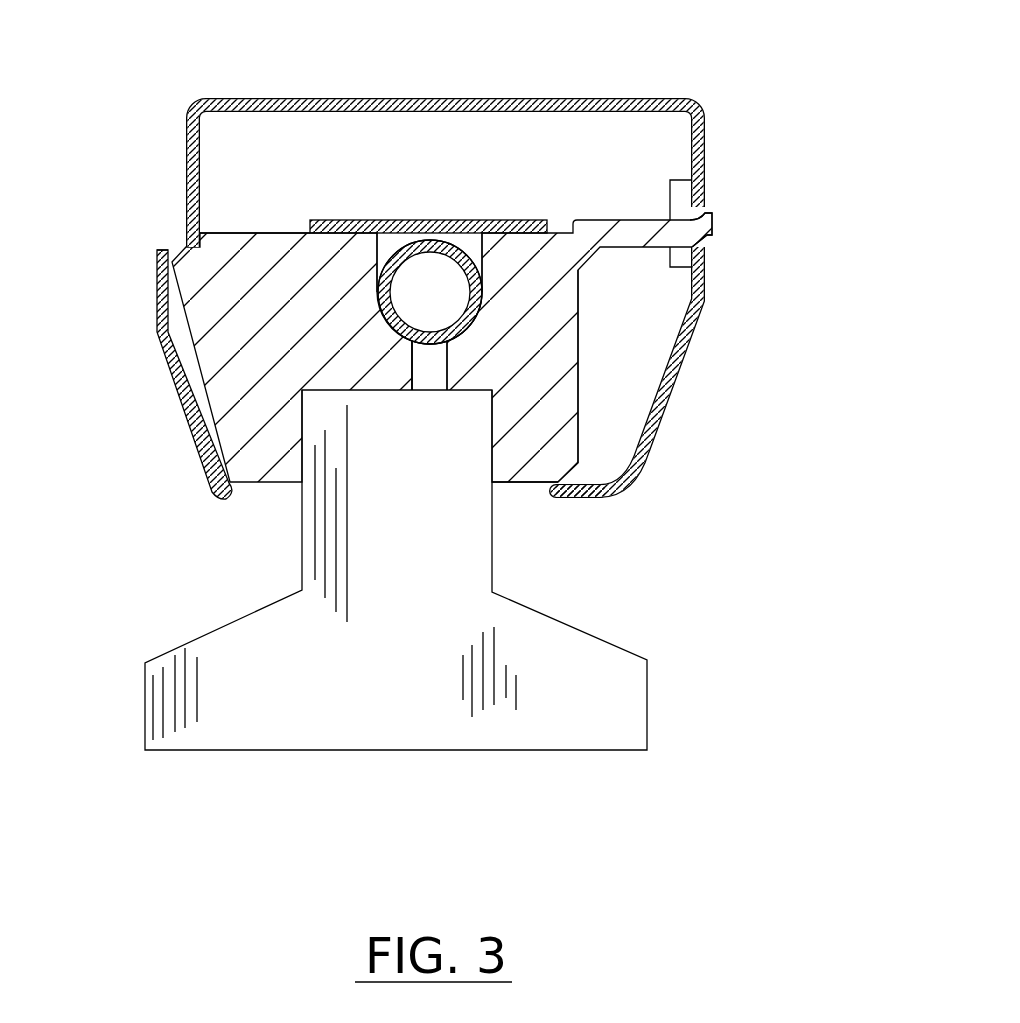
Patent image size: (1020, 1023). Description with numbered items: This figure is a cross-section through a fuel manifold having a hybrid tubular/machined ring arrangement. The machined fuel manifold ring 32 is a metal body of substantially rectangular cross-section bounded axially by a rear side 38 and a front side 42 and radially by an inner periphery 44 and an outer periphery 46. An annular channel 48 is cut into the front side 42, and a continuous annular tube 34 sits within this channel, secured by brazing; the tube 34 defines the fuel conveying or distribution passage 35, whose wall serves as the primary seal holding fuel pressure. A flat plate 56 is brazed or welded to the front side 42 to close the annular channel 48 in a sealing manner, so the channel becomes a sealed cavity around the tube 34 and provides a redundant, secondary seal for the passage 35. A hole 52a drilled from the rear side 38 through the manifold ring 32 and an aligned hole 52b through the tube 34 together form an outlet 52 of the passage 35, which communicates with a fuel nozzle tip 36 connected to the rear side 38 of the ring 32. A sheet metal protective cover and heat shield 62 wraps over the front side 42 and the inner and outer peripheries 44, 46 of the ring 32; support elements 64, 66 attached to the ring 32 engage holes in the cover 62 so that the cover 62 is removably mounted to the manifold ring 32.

The machined fuel manifold ring 32 is at (563, 305).
The tube 34 is at (376, 291).
The fuel conveying or distribution passage 35 is at (450, 308).
The fuel nozzle tip 36 is at (648, 705).
The rear side 38 is at (521, 483).
The front side 42 is at (292, 232).
The inner periphery 44 is at (160, 330).
The outer periphery 46 is at (580, 352).
The annular channel 48 is at (472, 243).
The outlet 52 is at (428, 378).
The hole in the machined fuel manifold ring 52a is at (413, 375).
The hole in the tube 52b is at (425, 345).
The plate 56 is at (383, 219).
The protective cover and heat shield 62 is at (602, 98).
The support element 64 is at (712, 222).
The support element 66 is at (176, 248).